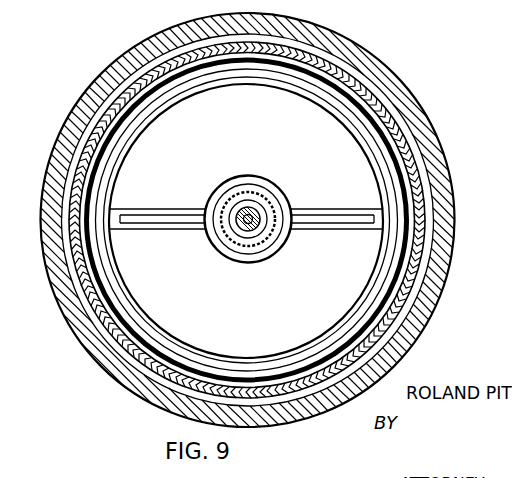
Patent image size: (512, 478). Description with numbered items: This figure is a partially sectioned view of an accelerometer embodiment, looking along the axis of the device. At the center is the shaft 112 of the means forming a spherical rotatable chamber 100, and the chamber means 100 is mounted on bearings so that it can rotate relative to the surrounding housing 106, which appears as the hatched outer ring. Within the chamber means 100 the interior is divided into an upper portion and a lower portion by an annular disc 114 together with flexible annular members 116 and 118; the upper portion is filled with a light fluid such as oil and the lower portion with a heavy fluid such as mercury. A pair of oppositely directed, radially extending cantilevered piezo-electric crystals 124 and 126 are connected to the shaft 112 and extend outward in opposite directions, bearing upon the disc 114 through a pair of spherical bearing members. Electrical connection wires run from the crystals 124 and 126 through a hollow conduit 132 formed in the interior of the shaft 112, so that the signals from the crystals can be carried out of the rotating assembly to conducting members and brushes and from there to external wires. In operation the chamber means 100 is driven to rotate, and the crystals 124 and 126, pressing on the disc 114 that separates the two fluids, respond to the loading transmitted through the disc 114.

The spherical rotatable chamber means 100 is at (107, 127).
The housing 106 is at (413, 117).
The shaft 112 is at (250, 214).
The annular disc 114 is at (249, 332).
The flexible annular member 116 is at (272, 252).
The flexible annular member 118 is at (355, 125).
The cantilevered piezo-electric crystal 124 is at (124, 216).
The cantilevered piezo-electric crystal 126 is at (352, 202).
The hollow conduit 132 is at (248, 226).